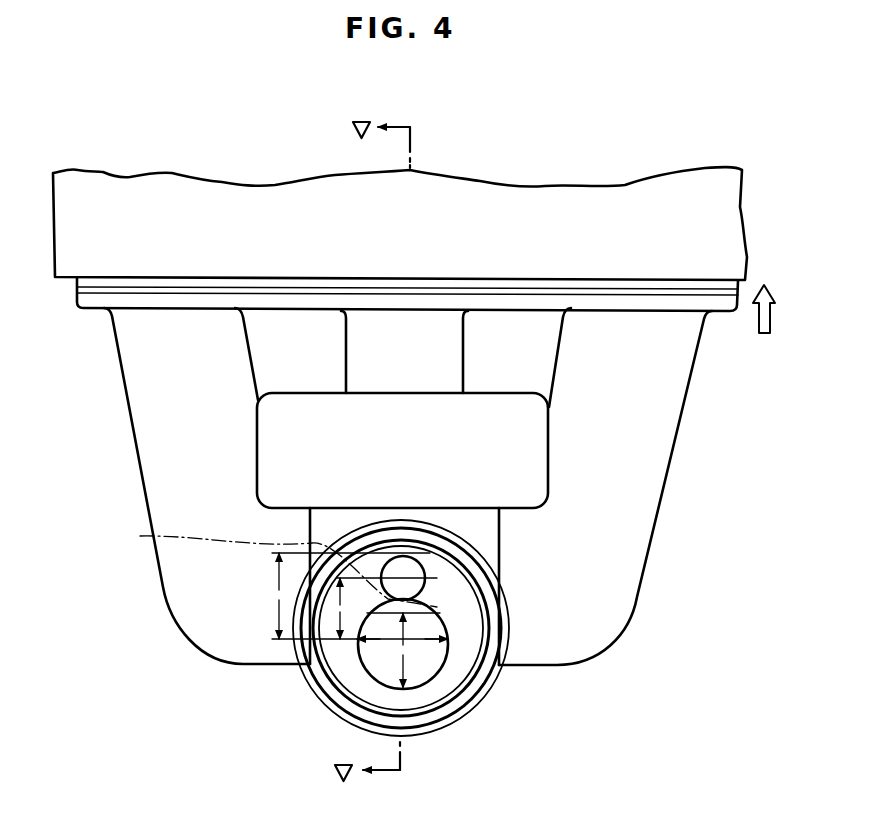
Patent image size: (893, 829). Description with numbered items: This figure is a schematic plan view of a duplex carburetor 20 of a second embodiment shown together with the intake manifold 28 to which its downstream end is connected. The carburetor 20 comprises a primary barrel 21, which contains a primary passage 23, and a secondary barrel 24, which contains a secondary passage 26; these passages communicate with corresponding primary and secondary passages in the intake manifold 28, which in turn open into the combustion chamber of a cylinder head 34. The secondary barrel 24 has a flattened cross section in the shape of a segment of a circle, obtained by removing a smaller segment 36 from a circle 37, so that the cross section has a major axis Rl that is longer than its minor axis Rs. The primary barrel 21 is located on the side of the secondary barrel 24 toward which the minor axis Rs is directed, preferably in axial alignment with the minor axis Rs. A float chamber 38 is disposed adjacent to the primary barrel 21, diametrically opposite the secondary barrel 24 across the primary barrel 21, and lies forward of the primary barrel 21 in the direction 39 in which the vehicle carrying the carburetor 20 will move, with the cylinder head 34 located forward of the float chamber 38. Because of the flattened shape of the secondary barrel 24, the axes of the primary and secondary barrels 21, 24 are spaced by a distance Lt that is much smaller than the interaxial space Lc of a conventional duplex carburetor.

The cylinder head 34 is at (433, 237).
The float chamber 38 is at (418, 465).
The direction 39 is at (760, 320).
The intake manifold 28 is at (677, 445).
The duplex carburetor 20 is at (477, 546).
The primary barrel 21 is at (430, 568).
The primary passage 23 is at (427, 580).
The secondary barrel 24 is at (447, 669).
The secondary passage 26 is at (434, 651).
The smaller segment 36 is at (274, 565).
The circle 37 is at (373, 674).
The interaxial space Lc is at (277, 589).
The distance Lt is at (338, 611).
The major axis Rl is at (375, 660).
The minor axis Rs is at (410, 657).